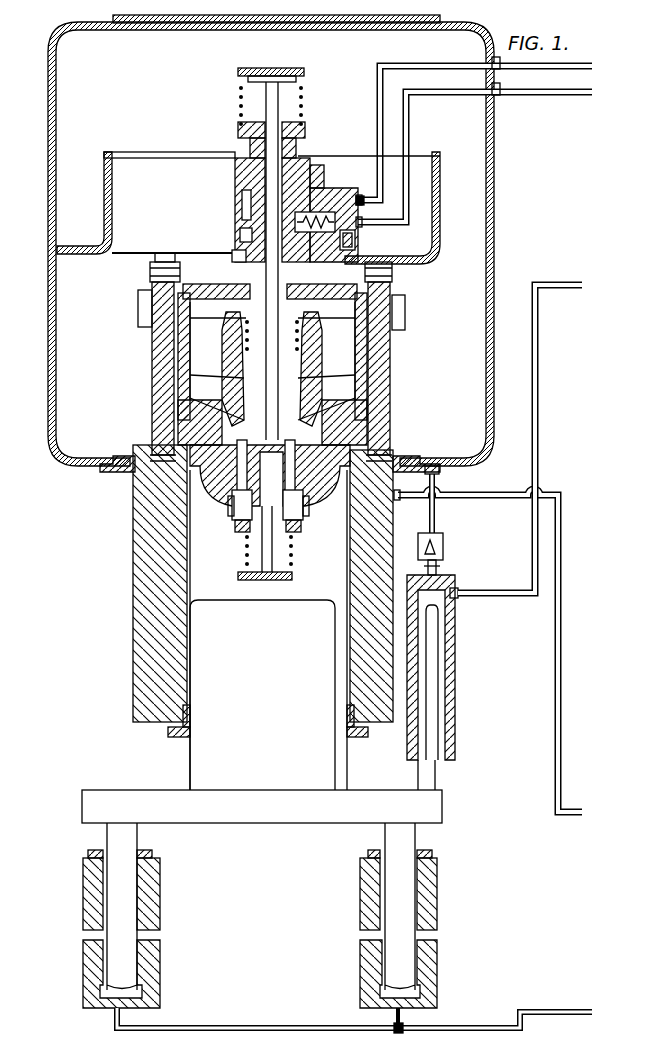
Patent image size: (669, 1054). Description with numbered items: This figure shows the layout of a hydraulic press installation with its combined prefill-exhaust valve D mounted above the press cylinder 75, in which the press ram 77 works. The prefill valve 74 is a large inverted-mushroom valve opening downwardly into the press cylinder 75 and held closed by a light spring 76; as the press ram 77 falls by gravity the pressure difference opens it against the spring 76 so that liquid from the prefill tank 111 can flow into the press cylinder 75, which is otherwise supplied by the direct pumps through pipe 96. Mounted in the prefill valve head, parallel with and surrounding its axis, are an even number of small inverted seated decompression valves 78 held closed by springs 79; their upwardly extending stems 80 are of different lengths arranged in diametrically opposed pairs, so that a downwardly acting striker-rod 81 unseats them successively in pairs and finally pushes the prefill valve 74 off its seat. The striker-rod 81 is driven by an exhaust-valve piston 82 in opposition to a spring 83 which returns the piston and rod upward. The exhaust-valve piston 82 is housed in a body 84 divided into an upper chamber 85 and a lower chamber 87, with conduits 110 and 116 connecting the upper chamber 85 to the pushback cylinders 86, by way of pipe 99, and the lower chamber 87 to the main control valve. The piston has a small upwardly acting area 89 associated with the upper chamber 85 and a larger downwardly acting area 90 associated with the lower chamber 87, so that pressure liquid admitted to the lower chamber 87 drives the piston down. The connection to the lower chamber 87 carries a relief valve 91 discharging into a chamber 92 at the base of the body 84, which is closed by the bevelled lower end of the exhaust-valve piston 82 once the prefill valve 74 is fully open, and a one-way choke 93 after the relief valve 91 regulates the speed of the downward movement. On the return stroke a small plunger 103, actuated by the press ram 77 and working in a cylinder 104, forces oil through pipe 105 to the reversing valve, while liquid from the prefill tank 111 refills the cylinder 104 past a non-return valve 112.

The prefill valve 74 is at (305, 490).
The press cylinder 75 is at (197, 546).
The spring 76 is at (241, 88).
The press ram 77 is at (218, 643).
The decompression valves 78 is at (237, 501).
The springs 79 is at (238, 566).
The stems 80 is at (358, 462).
The striker-rod 81 is at (300, 382).
The exhaust-valve piston 82 is at (240, 238).
The spring 83 is at (248, 340).
The body 84 is at (292, 128).
The upper chamber 85 is at (235, 191).
The pushback cylinders 86 is at (97, 918).
The lower chamber 87 is at (320, 210).
The small upwardly acting area 89 is at (300, 158).
The larger downwardly acting area 90 is at (318, 180).
The relief valve 91 is at (362, 240).
The chamber 92 is at (228, 262).
The one-way choke 93 is at (362, 200).
The pipe 96 is at (556, 735).
The pipe 99 is at (255, 1025).
The small plunger 103 is at (428, 780).
The cylinder 104 is at (448, 690).
The pipe 105 is at (538, 368).
The conduit 110 is at (533, 68).
The prefill tank 111 is at (492, 276).
The non-return valve 112 is at (443, 546).
The conduit 116 is at (566, 95).
The prefill-exhaust valve D is at (228, 165).